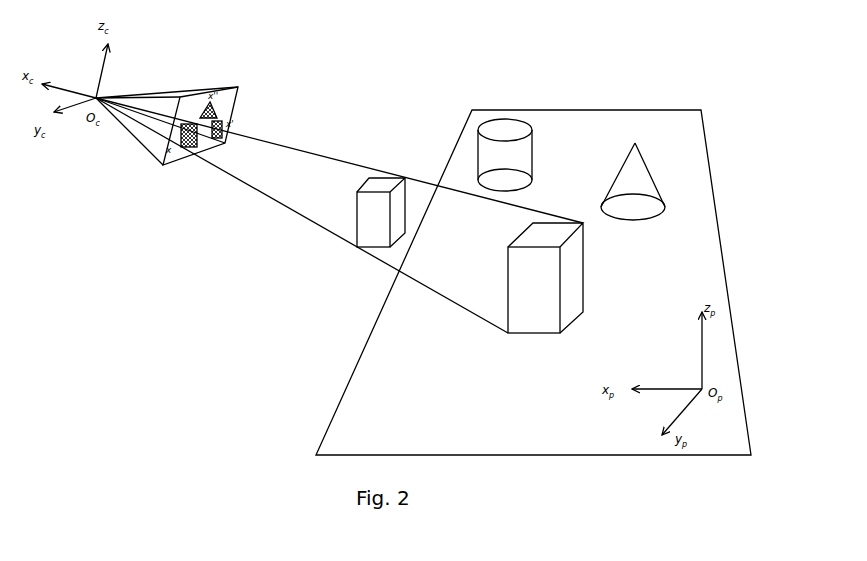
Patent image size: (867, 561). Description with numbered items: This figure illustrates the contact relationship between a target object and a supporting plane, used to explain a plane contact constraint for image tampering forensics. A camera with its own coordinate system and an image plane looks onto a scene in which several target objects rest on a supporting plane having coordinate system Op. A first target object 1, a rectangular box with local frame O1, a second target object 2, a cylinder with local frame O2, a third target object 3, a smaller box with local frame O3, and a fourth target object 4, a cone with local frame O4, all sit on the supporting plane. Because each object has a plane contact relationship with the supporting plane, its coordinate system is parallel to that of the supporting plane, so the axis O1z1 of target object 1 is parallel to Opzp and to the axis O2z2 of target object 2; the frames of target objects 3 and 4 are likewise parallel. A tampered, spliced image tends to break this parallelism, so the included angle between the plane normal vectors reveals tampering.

The first object (rectangular box) with local coordinate frame O1 1 is at (555, 339).
The second object (cylinder) with local coordinate frame O2 2 is at (481, 207).
The third object (small box) with local coordinate frame O3 3 is at (405, 233).
The fourth object (cone) with local coordinate frame O4 4 is at (590, 208).